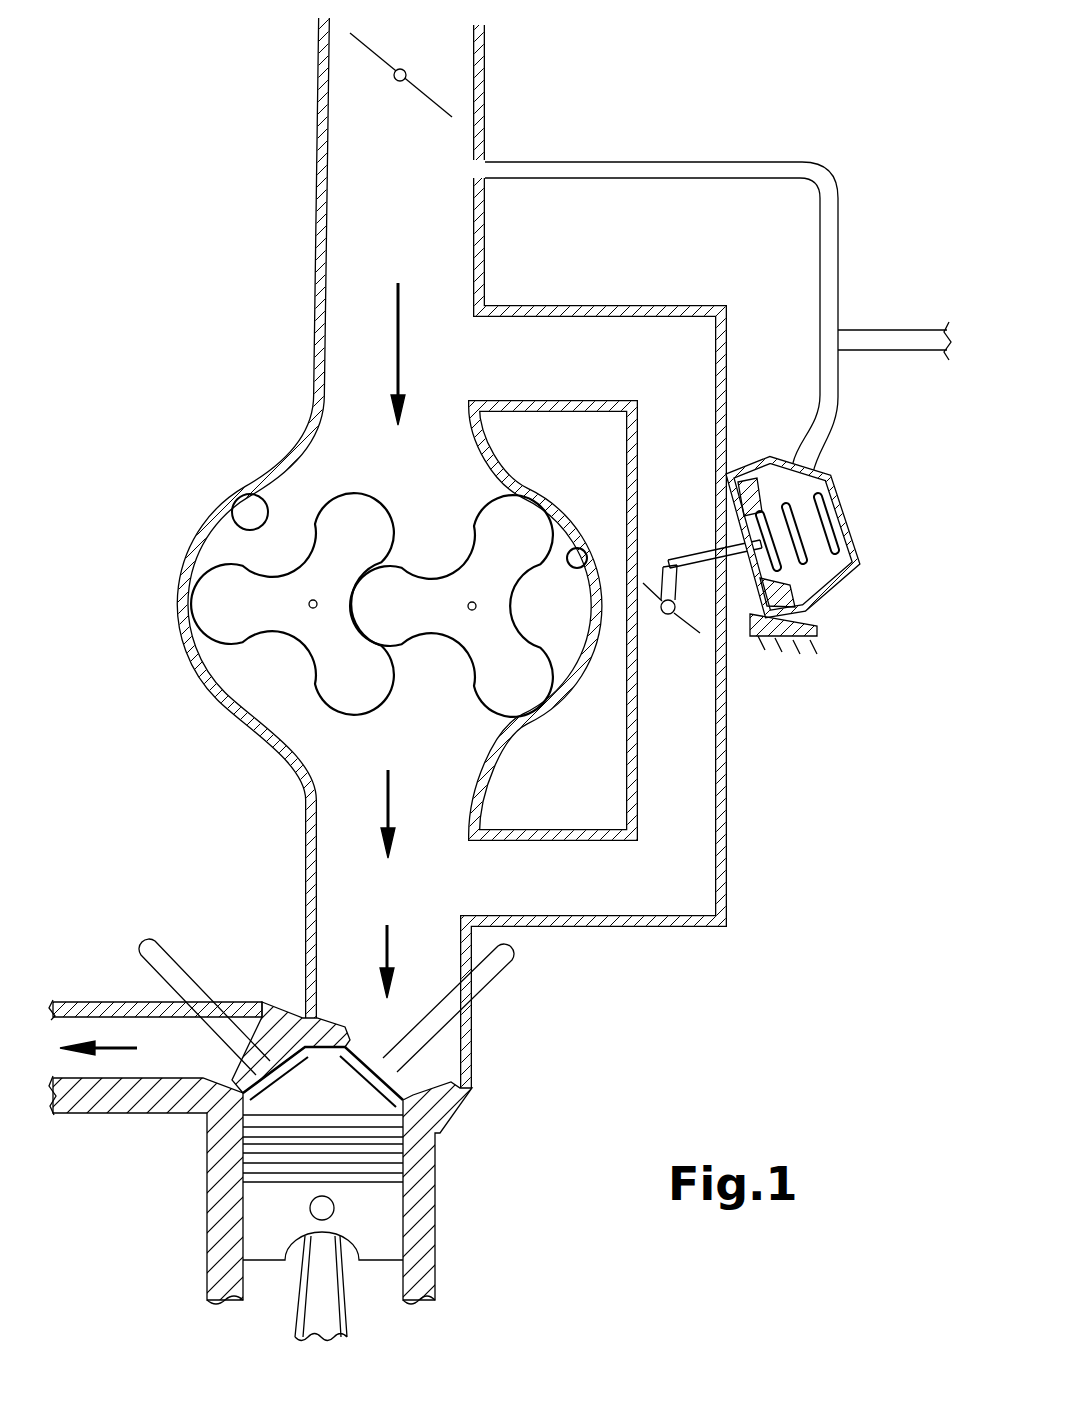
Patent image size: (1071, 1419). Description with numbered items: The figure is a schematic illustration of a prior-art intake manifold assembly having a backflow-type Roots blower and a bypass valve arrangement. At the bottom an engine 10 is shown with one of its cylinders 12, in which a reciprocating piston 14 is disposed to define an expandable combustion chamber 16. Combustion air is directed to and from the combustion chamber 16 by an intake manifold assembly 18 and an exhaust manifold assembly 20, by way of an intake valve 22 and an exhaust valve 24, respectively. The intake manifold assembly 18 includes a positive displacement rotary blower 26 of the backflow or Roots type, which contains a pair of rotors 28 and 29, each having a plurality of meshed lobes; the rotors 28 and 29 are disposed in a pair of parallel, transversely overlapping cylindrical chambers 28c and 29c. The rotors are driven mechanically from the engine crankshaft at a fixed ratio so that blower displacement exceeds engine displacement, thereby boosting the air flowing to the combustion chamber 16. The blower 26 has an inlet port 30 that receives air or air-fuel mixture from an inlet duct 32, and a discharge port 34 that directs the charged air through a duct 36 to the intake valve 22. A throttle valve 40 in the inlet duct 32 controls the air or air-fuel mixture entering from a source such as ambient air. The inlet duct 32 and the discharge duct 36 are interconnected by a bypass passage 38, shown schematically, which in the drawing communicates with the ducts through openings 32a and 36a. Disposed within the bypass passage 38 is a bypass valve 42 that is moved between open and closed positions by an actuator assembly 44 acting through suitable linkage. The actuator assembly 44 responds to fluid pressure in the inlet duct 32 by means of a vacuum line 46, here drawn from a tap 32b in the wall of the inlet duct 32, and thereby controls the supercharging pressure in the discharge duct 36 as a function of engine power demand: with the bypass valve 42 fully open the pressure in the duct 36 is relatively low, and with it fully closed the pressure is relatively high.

The engine 10 is at (152, 1152).
The cylinder 12 is at (427, 1210).
The reciprocating piston 14 is at (387, 1243).
The combustion chamber 16 is at (314, 1100).
The intake manifold assembly 18 is at (185, 772).
The exhaust manifold assembly 20 is at (112, 1000).
The intake valve 22 is at (497, 967).
The exhaust valve 24 is at (173, 952).
The positive displacement rotary blower 26 is at (175, 532).
The rotor 28 is at (287, 643).
The cylindrical chamber 28c is at (247, 490).
The rotor 29 is at (444, 655).
The cylindrical chamber 29c is at (583, 545).
The inlet port 30 is at (355, 425).
The inlet duct 32 is at (385, 140).
The bypass inlet opening 32a is at (470, 360).
The pressure tap opening 32b is at (475, 166).
The discharge port 34 is at (350, 745).
The discharge duct 36 is at (347, 903).
The bypass outlet opening 36a is at (467, 887).
The bypass passage 38 is at (680, 792).
The throttle valve 40 is at (372, 52).
The bypass valve 42 is at (683, 620).
The actuator assembly 44 is at (877, 514).
The vacuum line 46 is at (722, 158).